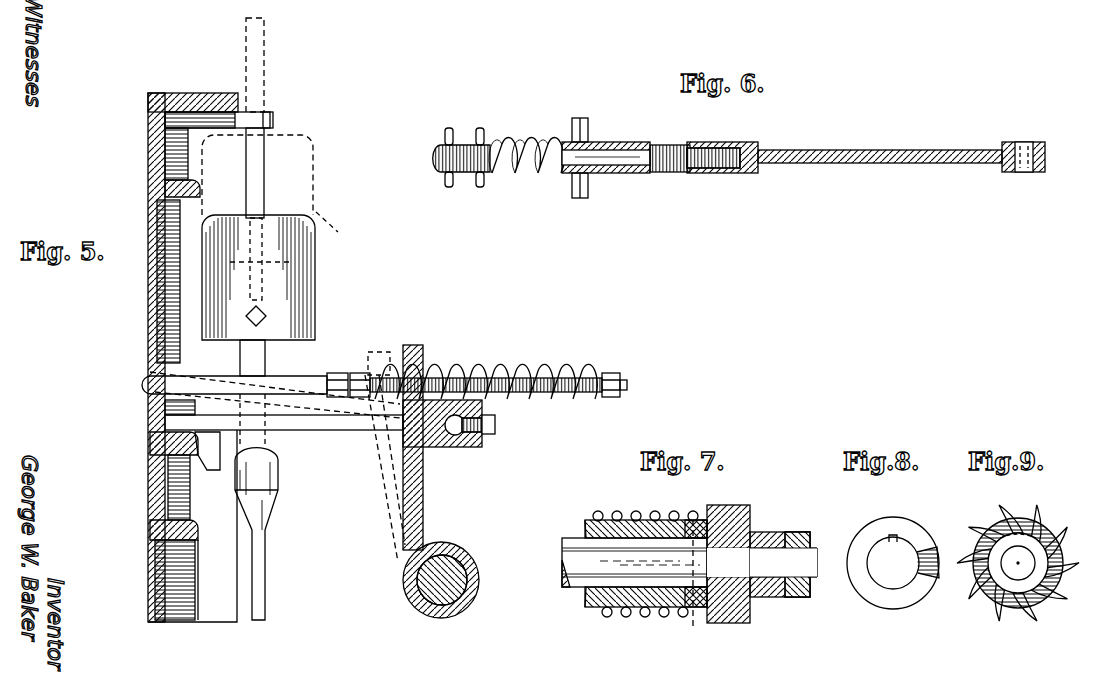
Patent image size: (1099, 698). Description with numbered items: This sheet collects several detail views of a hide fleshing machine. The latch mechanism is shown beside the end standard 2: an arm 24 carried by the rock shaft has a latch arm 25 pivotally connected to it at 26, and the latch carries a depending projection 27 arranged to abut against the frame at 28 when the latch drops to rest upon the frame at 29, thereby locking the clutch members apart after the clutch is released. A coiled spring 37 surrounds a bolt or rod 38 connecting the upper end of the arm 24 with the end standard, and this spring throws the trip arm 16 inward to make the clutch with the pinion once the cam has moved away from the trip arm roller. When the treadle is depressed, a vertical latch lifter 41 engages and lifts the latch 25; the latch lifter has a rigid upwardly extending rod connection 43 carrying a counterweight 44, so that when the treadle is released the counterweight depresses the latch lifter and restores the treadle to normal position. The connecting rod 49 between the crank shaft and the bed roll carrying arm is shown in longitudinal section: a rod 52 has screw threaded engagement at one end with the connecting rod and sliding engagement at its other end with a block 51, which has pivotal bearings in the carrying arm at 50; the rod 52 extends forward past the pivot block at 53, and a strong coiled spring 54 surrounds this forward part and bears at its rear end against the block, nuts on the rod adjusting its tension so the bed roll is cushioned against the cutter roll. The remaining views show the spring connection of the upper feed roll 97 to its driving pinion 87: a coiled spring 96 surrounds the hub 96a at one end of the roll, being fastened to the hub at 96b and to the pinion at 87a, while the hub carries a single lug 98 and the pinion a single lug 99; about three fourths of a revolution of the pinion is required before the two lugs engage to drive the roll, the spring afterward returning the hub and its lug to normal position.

In FIG. 5, the standard 2 is at (150, 490).
In FIG. 5, the trip arm 16 is at (412, 603).
In FIG. 5, the arm 24 is at (403, 504).
In FIG. 5, the latch arm 25 is at (336, 430).
In FIG. 5, the pivotal connection 26 is at (452, 447).
In FIG. 5, the depending projection 27 is at (213, 470).
In FIG. 5, the frame abutment 28 is at (150, 465).
In FIG. 5, the frame rest 29 is at (150, 432).
In FIG. 5, the coiled spring 37 is at (541, 374).
In FIG. 5, the bolt or rod 38 is at (627, 385).
In FIG. 5, the latch lifter 41 is at (265, 547).
In FIG. 5, the rod connection 43 is at (265, 352).
In FIG. 5, the counterweight 44 is at (316, 246).
In FIG. 6, the connecting rod 49 is at (792, 164).
In FIG. 6, the pivotal connection 50 is at (589, 190).
In FIG. 6, the block 51 is at (624, 143).
In FIG. 6, the rod 52 is at (676, 173).
In FIG. 6, the forward extension of rod 53 is at (440, 162).
In FIG. 6, the coiled spring 54 is at (505, 148).
In FIG. 7, the pinion 87 is at (740, 624).
In FIG. 9, the pinion 87 is at (1004, 600).
In FIG. 7, the spring fastening on pinion 87a is at (688, 516).
In FIG. 7, the coiled spring 96 is at (642, 618).
In FIG. 7, the hub 96a is at (588, 606).
In FIG. 8, the hub 96a is at (890, 600).
In FIG. 7, the spring fastening on hub 96b is at (592, 516).
In FIG. 7, the feed roll 97 is at (772, 536).
In FIG. 9, the feed roll 97 is at (1048, 592).
In FIG. 7, the lug 98 is at (700, 586).
In FIG. 8, the lug 98 is at (926, 548).
In FIG. 7, the lug 99 is at (722, 522).
In FIG. 9, the lug 99 is at (1038, 530).